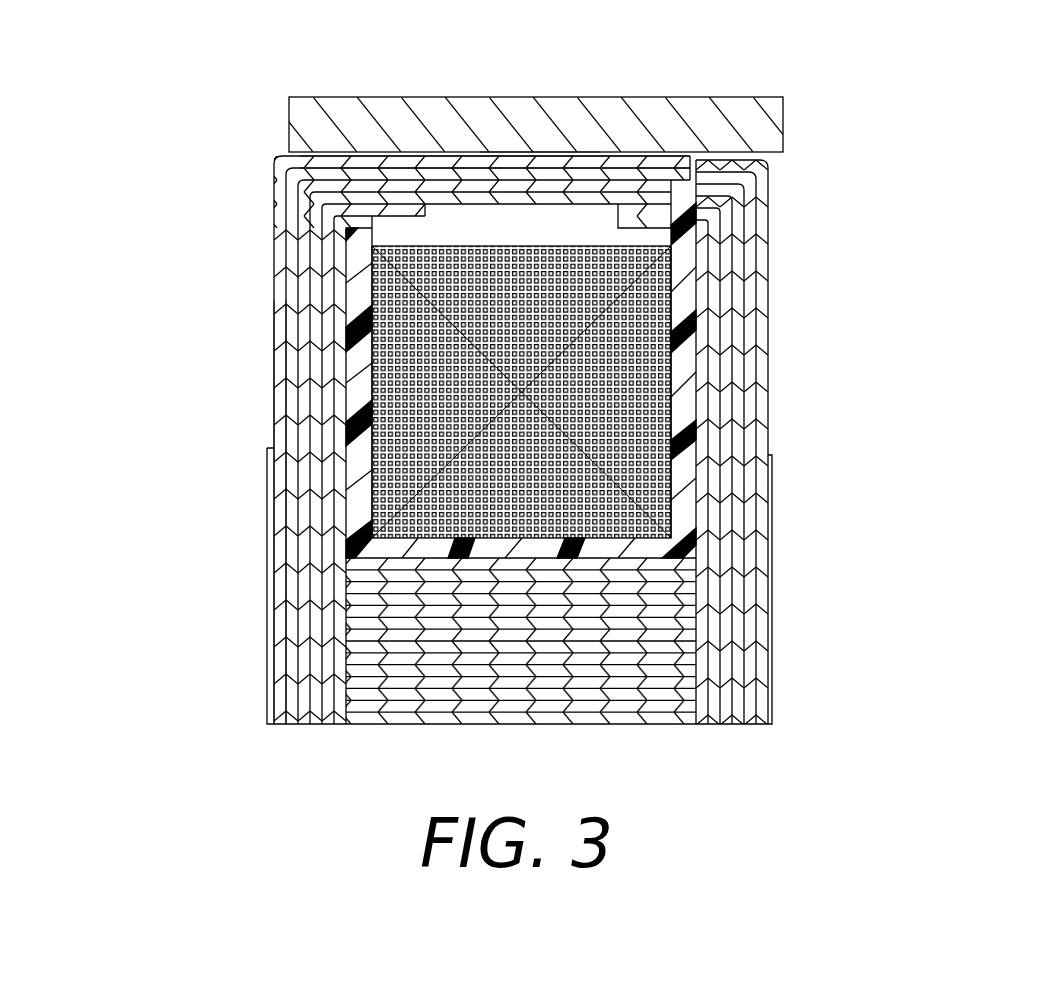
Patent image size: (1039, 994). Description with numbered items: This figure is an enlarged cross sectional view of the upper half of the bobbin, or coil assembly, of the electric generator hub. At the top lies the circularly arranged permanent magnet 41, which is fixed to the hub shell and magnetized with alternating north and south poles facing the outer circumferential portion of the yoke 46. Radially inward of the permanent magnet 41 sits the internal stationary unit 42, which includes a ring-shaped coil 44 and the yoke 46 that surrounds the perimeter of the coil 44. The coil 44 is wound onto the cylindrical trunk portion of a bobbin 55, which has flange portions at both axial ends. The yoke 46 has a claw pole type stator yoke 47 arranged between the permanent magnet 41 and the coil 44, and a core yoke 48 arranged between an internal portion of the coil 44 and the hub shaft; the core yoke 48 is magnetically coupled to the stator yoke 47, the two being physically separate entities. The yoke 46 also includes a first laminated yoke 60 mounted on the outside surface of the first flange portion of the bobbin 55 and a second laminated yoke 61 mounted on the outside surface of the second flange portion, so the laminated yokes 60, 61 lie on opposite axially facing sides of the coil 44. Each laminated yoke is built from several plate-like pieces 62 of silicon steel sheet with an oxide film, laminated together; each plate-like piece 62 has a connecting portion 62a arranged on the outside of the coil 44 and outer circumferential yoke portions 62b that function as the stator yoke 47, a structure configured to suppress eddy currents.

The permanent magnet 41 is at (722, 97).
The internal stationary unit 42 is at (506, 152).
The ring-shaped coil 44 is at (585, 488).
The yoke 46 is at (776, 269).
The stator yoke 47 is at (653, 192).
The core yoke 48 is at (663, 623).
The bobbin 55 is at (685, 432).
The first laminated yoke 60 is at (273, 181).
The second laminated yoke 61 is at (771, 211).
The plate-like piece 62 is at (552, 152).
The connecting portion 62a is at (275, 330).
The outer circumferential yoke portion 62b is at (353, 158).